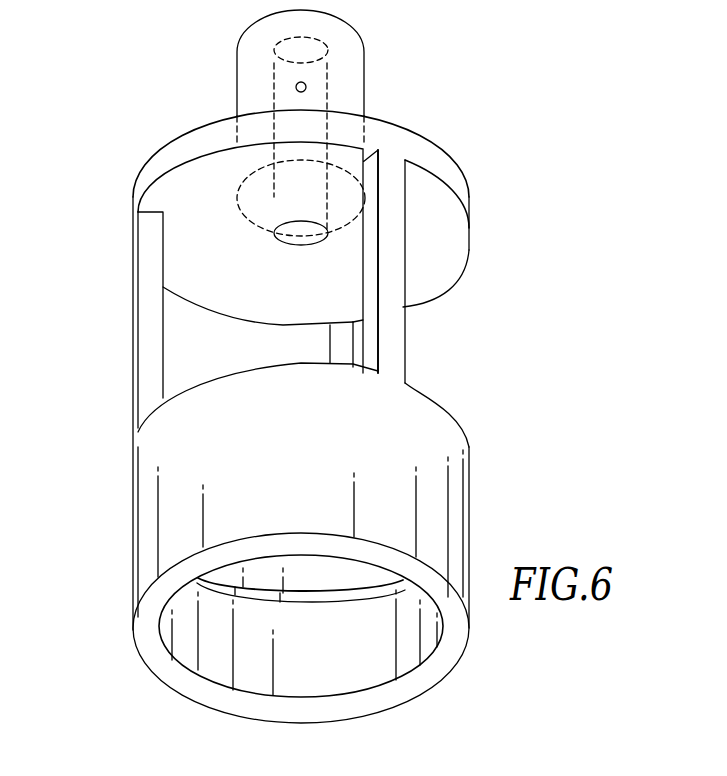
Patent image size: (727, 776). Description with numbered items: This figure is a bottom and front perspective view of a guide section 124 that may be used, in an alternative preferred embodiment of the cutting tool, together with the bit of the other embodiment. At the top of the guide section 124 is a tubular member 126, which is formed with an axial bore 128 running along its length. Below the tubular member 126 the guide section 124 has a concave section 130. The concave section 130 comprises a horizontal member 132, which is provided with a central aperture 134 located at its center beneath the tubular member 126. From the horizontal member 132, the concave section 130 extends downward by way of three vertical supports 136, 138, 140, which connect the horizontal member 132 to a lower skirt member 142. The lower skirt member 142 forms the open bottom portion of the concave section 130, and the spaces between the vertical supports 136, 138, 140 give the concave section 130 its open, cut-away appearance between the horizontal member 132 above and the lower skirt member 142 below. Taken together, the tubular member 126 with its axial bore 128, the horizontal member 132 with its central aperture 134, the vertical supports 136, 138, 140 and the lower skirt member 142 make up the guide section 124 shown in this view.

The guide section 124 is at (133, 127).
The tubular member 126 is at (358, 70).
The axial bore 128 is at (318, 44).
The concave section 130 is at (102, 229).
The horizontal member 132 is at (221, 130).
The central aperture 134 is at (306, 243).
The vertical support 136 is at (135, 287).
The vertical support 138 is at (403, 327).
The vertical support 140 is at (338, 348).
The lower skirt member 142 is at (458, 510).